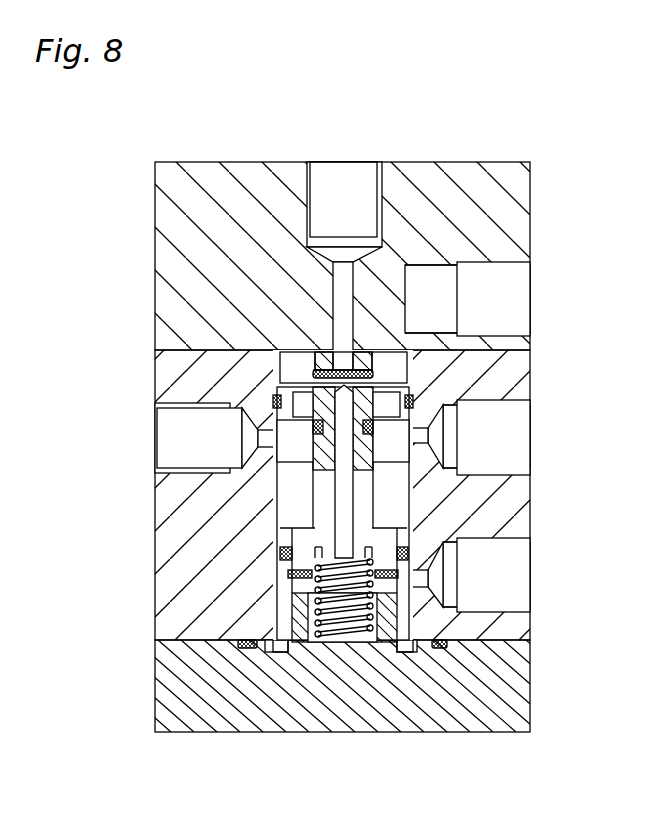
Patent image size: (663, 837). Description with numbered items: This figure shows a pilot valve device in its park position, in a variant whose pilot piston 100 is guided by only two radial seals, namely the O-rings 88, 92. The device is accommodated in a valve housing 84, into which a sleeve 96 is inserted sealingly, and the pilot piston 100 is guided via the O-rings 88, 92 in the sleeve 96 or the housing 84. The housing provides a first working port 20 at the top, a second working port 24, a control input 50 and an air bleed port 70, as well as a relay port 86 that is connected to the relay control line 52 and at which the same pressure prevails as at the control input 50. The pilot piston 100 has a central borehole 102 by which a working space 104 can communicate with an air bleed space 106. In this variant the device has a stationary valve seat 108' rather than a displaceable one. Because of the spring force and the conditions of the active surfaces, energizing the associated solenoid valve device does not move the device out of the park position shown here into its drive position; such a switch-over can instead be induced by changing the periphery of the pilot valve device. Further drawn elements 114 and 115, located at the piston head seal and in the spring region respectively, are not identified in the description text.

The first working port 20 is at (330, 177).
The seal 114 is at (358, 372).
The valve housing 84 is at (513, 210).
The second working port 24 is at (513, 298).
The working space 104 is at (300, 355).
The sleeve 96 is at (507, 372).
The relay port 86 is at (165, 422).
The relay control line 52 is at (172, 456).
The control input 50 is at (513, 438).
The O-ring 92 is at (365, 428).
The central borehole 102 is at (345, 500).
The O-ring 88 is at (408, 553).
The pilot piston 100 is at (283, 538).
The air bleed port 70 is at (517, 588).
The air bleed space 106 is at (282, 605).
The stationary valve seat 108' is at (305, 680).
The spring seat 115 is at (358, 610).